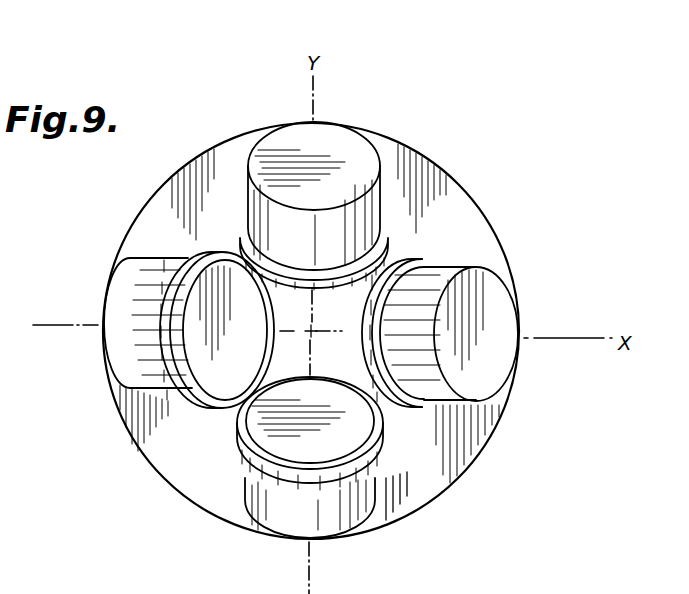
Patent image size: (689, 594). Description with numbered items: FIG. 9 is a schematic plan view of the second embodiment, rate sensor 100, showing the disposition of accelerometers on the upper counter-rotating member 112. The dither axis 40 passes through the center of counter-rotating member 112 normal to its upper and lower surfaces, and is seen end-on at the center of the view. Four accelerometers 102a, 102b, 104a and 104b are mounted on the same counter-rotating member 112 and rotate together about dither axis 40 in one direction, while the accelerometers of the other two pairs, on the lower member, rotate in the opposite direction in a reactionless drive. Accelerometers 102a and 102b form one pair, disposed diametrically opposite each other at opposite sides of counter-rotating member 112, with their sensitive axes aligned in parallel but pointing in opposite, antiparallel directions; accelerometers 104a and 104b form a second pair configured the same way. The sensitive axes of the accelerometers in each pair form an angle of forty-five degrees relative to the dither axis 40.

The rate sensor 100 is at (487, 196).
The upper counter-rotating member 112 is at (181, 464).
The dither axis 40 is at (311, 333).
The accelerometer 102a is at (123, 293).
The accelerometer 102b is at (500, 304).
The accelerometer 104a is at (334, 150).
The accelerometer 104b is at (356, 506).